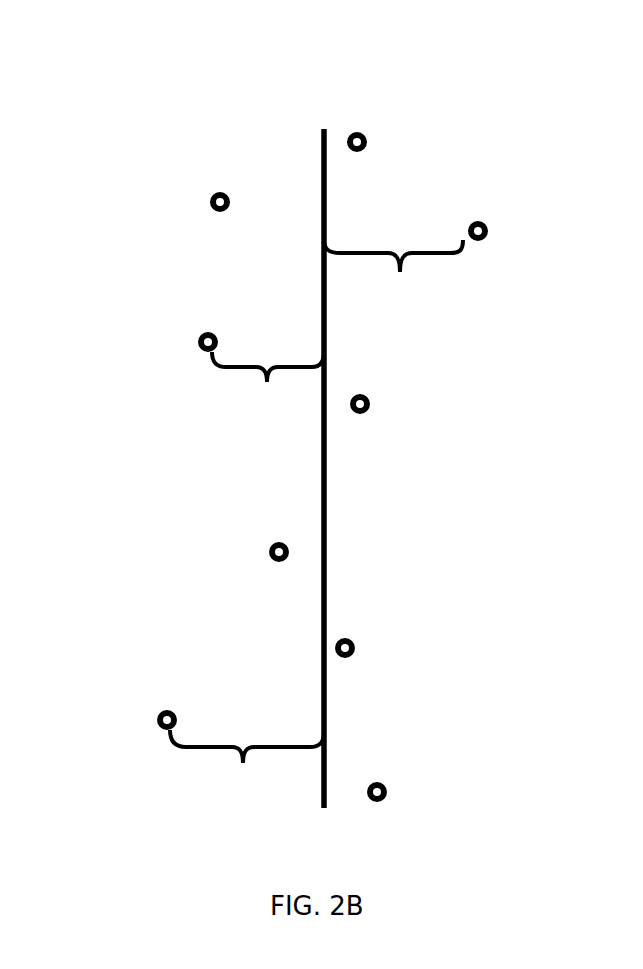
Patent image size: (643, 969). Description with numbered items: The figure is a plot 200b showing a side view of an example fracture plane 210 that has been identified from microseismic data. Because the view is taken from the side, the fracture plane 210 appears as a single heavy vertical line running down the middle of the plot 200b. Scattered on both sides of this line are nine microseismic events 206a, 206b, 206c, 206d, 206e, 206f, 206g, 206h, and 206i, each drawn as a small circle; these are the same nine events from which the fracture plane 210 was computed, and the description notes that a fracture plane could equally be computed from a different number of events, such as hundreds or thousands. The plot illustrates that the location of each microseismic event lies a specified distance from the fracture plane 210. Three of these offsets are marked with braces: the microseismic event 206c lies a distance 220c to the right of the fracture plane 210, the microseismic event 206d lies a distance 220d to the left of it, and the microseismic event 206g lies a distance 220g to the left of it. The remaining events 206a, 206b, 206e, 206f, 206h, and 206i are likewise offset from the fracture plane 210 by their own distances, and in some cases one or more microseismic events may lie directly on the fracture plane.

The plot 200b is at (176, 62).
The fracture plane 210 is at (322, 140).
The microseismic event 206a is at (229, 200).
The microseismic event 206b is at (366, 140).
The microseismic event 206c is at (487, 229).
The microseismic event 206d is at (217, 340).
The microseismic event 206e is at (369, 402).
The microseismic event 206f is at (270, 551).
The microseismic event 206g is at (176, 718).
The microseismic event 206h is at (354, 646).
The microseismic event 206i is at (386, 790).
The distance 220c is at (393, 275).
The distance 220d is at (268, 387).
The distance 220g is at (247, 766).